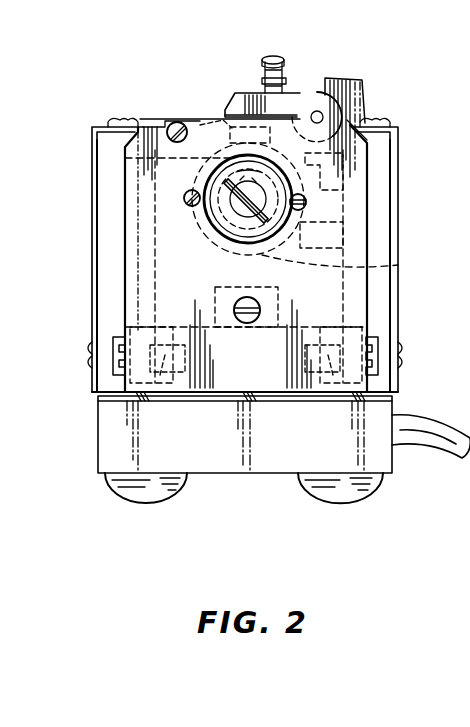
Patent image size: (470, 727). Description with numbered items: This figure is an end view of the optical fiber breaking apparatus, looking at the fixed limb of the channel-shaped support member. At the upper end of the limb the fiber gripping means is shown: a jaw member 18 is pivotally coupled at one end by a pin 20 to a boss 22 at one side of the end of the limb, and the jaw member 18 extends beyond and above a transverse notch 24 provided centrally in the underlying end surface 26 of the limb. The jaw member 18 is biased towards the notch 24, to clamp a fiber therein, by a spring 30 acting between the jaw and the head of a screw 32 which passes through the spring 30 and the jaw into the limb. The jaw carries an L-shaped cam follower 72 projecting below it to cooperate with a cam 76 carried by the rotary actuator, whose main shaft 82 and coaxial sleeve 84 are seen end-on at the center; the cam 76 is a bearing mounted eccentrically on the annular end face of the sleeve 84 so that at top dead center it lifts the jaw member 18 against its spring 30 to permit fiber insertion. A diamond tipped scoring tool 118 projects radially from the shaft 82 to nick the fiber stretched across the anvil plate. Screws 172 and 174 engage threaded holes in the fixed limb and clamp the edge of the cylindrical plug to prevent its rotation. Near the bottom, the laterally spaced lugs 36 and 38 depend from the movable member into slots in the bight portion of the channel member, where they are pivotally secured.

The jaw member 18 is at (238, 92).
The pin 20 is at (323, 117).
The boss 22 is at (310, 108).
The transverse notch 24 is at (224, 121).
The end surface 26 is at (163, 124).
The spring 30 is at (285, 70).
The screw 32 is at (268, 57).
The lug 36 is at (368, 373).
The lug 38 is at (125, 375).
The cam follower 72 is at (188, 120).
The cam 76 is at (92, 157).
The main shaft 82 is at (225, 213).
The sleeve 84 is at (205, 237).
The diamond tipped scoring tool 118 is at (398, 266).
The screw 172 is at (184, 200).
The screw 174 is at (306, 199).